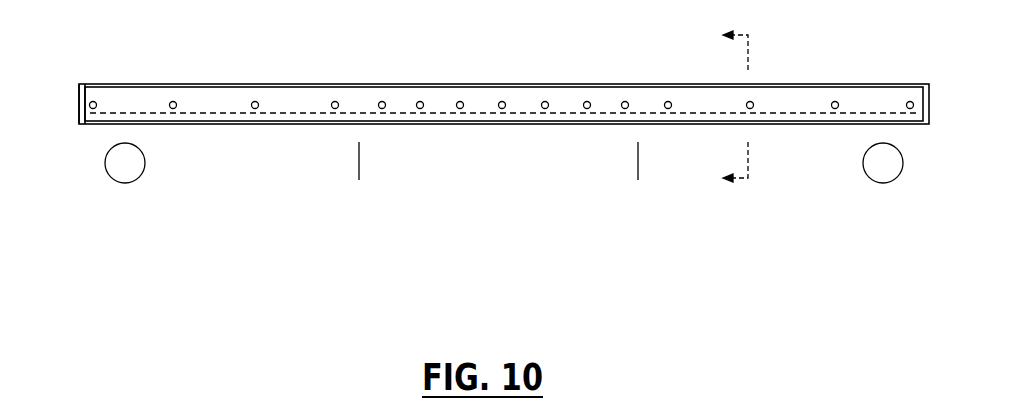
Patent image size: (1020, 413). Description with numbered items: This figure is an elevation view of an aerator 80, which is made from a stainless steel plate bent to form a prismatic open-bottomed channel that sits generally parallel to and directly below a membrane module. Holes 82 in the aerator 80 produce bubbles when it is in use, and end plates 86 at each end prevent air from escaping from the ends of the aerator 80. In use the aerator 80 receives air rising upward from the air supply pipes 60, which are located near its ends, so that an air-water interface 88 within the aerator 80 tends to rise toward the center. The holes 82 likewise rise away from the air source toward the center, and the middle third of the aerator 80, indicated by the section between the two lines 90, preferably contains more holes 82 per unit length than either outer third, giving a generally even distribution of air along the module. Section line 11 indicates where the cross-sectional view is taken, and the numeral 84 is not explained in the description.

The aerator 80 is at (473, 181).
The holes 82 is at (256, 101).
The housing 84 is at (425, 85).
The end plates 86 is at (80, 103).
The air-water interface 88 is at (449, 108).
The lines 90 is at (352, 158).
The air supply pipes 60 is at (143, 180).
The section line 11 is at (720, 106).